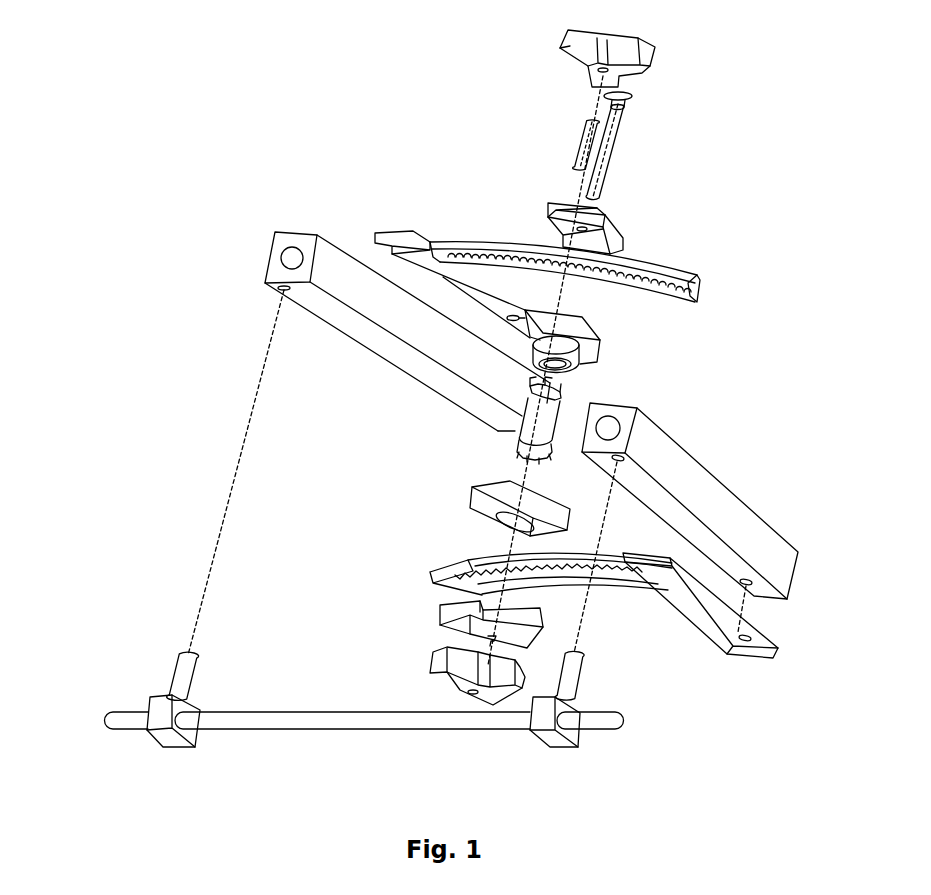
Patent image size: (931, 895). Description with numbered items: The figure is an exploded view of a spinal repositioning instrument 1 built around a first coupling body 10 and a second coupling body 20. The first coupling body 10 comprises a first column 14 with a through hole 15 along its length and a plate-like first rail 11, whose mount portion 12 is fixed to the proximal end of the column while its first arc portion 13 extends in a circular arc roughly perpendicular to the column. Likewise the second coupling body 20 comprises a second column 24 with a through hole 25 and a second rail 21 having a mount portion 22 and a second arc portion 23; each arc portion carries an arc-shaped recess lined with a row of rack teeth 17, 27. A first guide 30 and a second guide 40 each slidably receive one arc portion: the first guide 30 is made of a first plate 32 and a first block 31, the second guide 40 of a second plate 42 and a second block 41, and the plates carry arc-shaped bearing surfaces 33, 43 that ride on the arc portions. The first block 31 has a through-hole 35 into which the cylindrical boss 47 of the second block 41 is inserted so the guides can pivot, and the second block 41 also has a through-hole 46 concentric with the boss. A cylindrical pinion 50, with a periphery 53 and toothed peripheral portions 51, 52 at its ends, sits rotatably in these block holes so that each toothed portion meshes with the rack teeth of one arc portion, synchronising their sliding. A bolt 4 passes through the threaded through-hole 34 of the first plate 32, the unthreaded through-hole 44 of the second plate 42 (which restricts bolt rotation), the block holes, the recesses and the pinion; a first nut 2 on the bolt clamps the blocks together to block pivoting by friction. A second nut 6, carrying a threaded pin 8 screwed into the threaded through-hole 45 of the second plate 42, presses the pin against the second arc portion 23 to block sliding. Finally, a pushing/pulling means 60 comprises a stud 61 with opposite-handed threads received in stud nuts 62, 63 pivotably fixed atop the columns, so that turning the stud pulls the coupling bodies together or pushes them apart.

The spinal repositioning instrument 1 is at (766, 86).
The first nut 2 is at (428, 664).
The bolt 4 is at (614, 154).
The second nut 6 is at (650, 46).
The threaded pin 8 is at (598, 122).
The first coupling body 10 is at (798, 638).
The first rail 11 is at (597, 600).
The mount portion 12 is at (695, 617).
The first arc portion 13 is at (472, 572).
The first column 14 is at (706, 458).
The through hole 15 is at (614, 424).
The rack teeth 17 is at (605, 578).
The second coupling body 20 is at (285, 210).
The second rail 21 is at (610, 294).
The mount portion 22 is at (381, 235).
The second arc portion 23 is at (435, 242).
The second column 24 is at (350, 342).
The through hole 25 is at (290, 249).
The rack teeth 27 is at (462, 249).
The first guide 30 is at (336, 538).
The first block 31 is at (466, 502).
The first plate 32 is at (438, 602).
The bearing surfaces 33 is at (484, 612).
The threaded through-hole 34 is at (487, 645).
The through-hole 35 is at (505, 521).
The second guide 40 is at (772, 252).
The second block 41 is at (612, 344).
The second plate 42 is at (625, 217).
The bearing surfaces 43 is at (570, 238).
The unthreaded through-hole 44 is at (622, 239).
The threaded through-hole 45 is at (550, 212).
The through-hole 46 is at (552, 366).
The cylindrical boss 47 is at (606, 342).
The pinion 50 is at (386, 403).
The toothed peripheral portion 51 is at (518, 445).
The toothed peripheral portion 52 is at (530, 393).
The periphery 53 is at (527, 423).
The pushing/pulling means 60 is at (125, 750).
The stud 61 is at (290, 708).
The stud nut 62 is at (154, 701).
The stud nut 63 is at (565, 750).